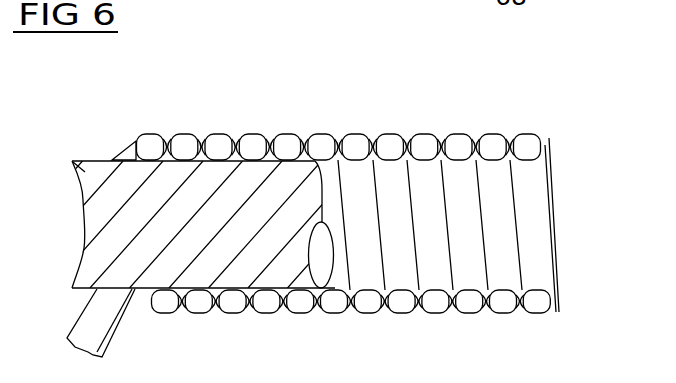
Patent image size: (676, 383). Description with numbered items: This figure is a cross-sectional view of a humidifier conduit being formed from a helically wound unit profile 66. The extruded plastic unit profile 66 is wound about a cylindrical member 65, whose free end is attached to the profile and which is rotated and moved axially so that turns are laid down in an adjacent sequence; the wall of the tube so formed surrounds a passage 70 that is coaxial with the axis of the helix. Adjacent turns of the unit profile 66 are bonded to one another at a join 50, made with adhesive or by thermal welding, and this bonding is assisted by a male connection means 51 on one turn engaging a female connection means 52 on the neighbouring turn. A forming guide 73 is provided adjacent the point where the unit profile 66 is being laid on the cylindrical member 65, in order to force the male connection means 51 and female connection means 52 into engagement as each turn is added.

The cylindrical member 65 is at (115, 190).
The forming guide 73 is at (125, 142).
The join 50 is at (332, 137).
The male connection means 51 is at (369, 138).
The female connection means 52 is at (380, 138).
The unit profile 66 is at (339, 107).
The passage 70 is at (452, 232).